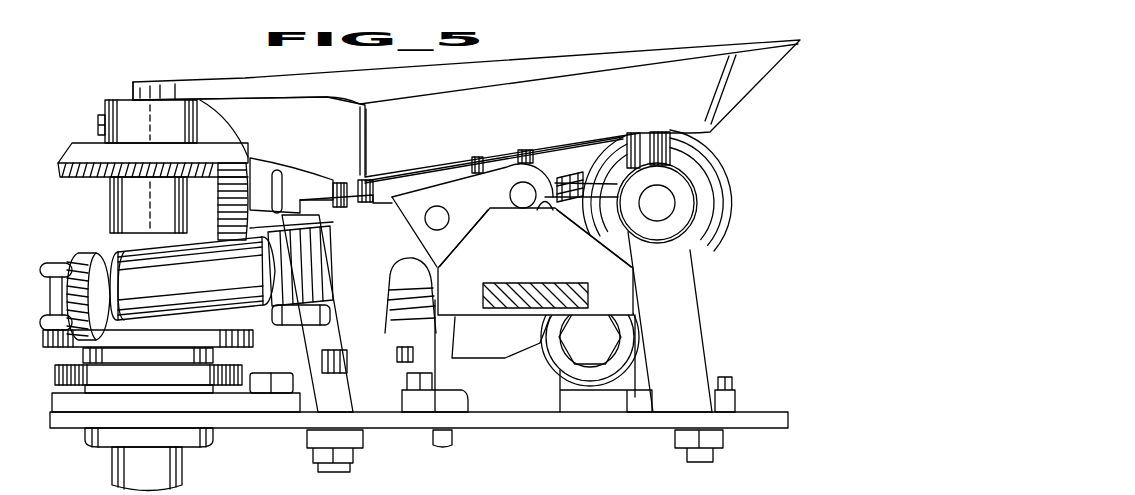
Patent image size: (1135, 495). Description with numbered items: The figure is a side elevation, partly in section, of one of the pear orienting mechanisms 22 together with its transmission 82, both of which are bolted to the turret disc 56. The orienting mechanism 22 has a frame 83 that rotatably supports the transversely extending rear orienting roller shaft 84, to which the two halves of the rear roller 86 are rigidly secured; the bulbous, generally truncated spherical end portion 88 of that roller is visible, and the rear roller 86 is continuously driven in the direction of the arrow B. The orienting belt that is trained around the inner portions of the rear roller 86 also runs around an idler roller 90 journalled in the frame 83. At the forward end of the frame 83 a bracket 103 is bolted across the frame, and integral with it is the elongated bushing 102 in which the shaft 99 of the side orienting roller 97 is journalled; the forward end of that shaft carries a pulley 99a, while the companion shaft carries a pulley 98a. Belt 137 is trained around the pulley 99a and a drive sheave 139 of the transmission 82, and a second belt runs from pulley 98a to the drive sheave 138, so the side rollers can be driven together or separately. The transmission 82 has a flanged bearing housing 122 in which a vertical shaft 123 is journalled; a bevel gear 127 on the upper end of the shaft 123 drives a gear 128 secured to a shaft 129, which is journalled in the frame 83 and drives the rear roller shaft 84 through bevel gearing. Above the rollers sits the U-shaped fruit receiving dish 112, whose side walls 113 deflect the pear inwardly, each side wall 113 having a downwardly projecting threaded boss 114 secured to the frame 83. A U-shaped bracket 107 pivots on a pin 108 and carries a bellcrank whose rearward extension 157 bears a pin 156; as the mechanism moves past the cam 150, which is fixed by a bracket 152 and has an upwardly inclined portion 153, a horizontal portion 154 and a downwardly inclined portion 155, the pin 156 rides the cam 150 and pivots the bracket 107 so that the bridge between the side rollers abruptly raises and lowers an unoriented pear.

The orienting mechanism 22 is at (509, 53).
The turret disc 56 is at (494, 419).
The transmission 82 is at (88, 145).
The frame 83 is at (685, 376).
The rear orienting roller shaft 84 is at (645, 204).
The rear roller 86 is at (713, 147).
The bulbous end portion 88 is at (720, 181).
The idler roller 90 is at (618, 352).
The side orienting roller 97 is at (566, 177).
The pulley 98a is at (272, 322).
The shaft 99 is at (50, 323).
The pulley 99a is at (120, 282).
The bushing 102 is at (245, 282).
The bracket 103 is at (372, 258).
The U-shaped bracket 107 is at (468, 340).
The pin 108 is at (425, 218).
The fruit receiving dish 112 is at (345, 75).
The side wall 113 is at (460, 136).
The threaded boss 114 is at (494, 167).
The flanged bearing housing 122 is at (172, 390).
The shaft 123 is at (160, 462).
The bevel gear 127 is at (78, 152).
The gear 128 is at (237, 170).
The shaft 129 is at (300, 200).
The belt 137 is at (58, 262).
The drive sheave 138 is at (225, 343).
The drive sheave 139 is at (43, 262).
The cam 150 is at (606, 296).
The bracket 152 is at (522, 290).
The upwardly inclined portion 153 is at (598, 232).
The horizontal portion 154 is at (548, 210).
The downwardly inclined portion 155 is at (462, 241).
The pin 156 is at (521, 209).
The rearward extension 157 is at (487, 204).
The arrow B is at (747, 205).